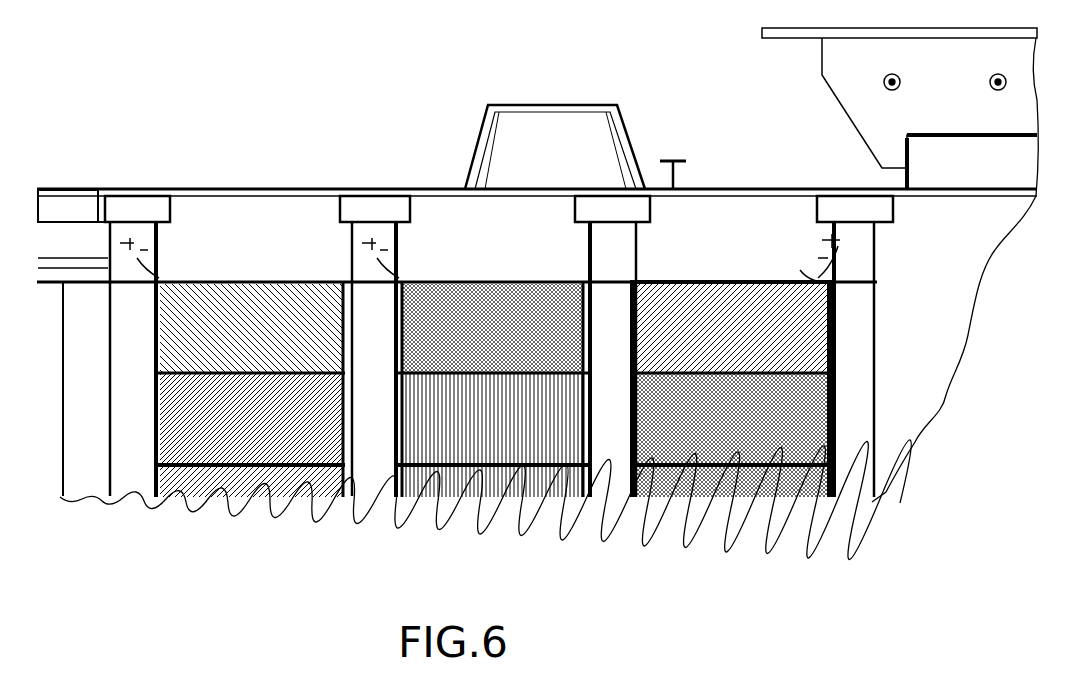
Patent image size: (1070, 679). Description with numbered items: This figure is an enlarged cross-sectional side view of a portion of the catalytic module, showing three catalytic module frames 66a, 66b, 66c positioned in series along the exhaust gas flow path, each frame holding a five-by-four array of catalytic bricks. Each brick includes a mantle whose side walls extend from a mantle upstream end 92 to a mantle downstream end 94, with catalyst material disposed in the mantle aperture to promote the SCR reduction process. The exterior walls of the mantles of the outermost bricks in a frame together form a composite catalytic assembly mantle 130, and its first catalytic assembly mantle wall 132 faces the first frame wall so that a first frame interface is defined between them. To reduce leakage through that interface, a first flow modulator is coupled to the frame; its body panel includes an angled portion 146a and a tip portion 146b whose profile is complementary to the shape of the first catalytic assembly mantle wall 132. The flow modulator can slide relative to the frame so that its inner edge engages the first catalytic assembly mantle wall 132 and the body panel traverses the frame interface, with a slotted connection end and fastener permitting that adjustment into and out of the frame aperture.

The catalytic module frame 66a is at (858, 470).
The catalytic module frame 66b is at (370, 478).
The catalytic module frame 66c is at (130, 475).
The mantle upstream end 92 is at (838, 357).
The mantle downstream end 94 is at (627, 360).
The composite catalytic assembly mantle 130 is at (732, 270).
The first catalytic assembly mantle wall 132 is at (703, 280).
The angled portion 146a is at (834, 290).
The tip portion 146b is at (802, 280).